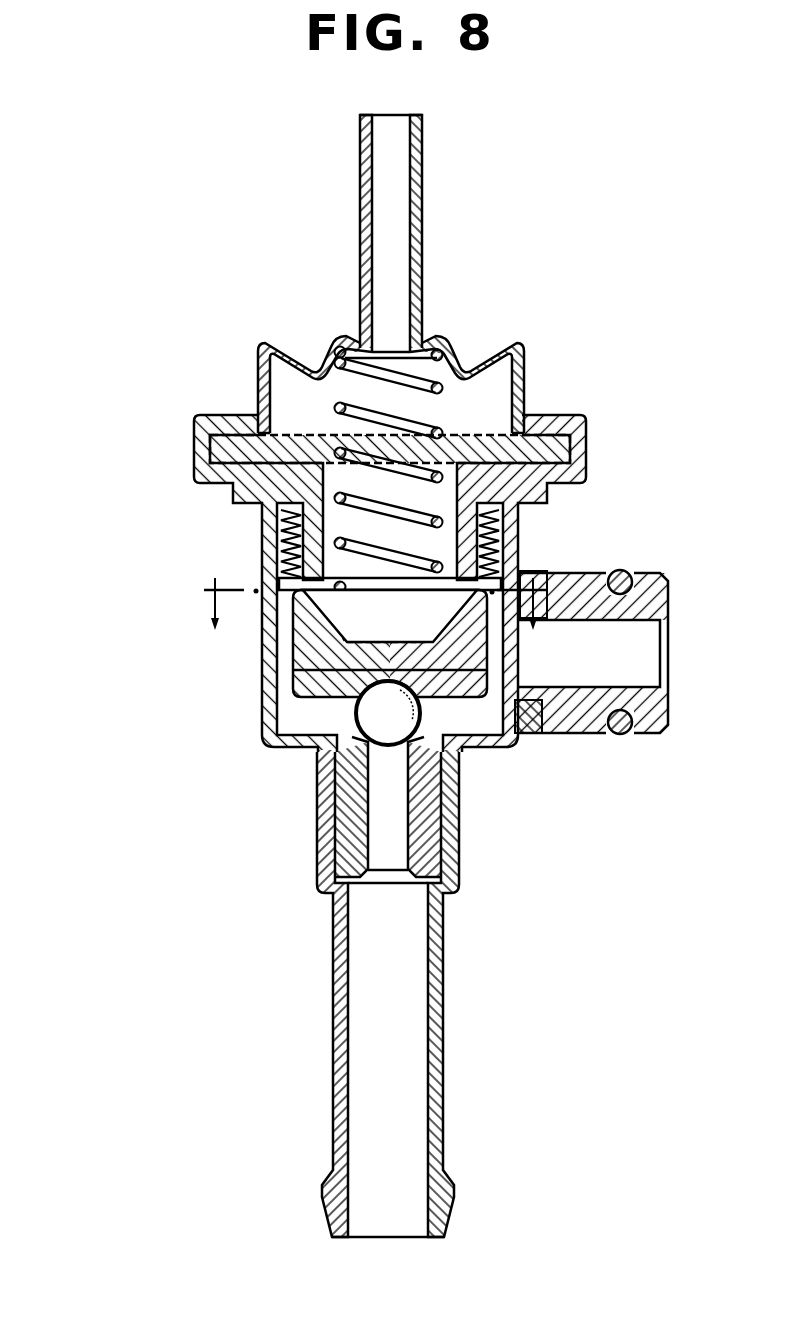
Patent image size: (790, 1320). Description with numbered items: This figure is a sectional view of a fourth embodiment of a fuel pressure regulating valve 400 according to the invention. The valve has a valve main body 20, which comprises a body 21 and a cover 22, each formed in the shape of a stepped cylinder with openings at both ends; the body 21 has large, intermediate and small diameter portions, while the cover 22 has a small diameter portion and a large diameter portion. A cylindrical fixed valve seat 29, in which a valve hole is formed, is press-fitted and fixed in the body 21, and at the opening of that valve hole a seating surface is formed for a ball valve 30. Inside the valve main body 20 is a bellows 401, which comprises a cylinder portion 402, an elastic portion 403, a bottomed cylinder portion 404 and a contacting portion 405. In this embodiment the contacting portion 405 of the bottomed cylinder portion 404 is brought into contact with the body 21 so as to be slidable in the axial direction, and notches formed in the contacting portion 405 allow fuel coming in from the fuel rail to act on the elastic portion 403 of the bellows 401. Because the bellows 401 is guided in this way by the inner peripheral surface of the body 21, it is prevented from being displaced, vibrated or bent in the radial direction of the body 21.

The pressure regulator valve assembly 400 is at (300, 278).
The cylinder portion 402 is at (282, 428).
The cover 22 is at (528, 364).
The valve main body 20 is at (200, 490).
The elastic portion 403 is at (262, 528).
The bellows 401 is at (277, 568).
The contacting portion 405 is at (252, 588).
The bottomed cylinder portion 404 is at (292, 672).
The body 21 is at (268, 740).
The ball valve 30 is at (335, 783).
The fixed valve seat 29 is at (345, 848).